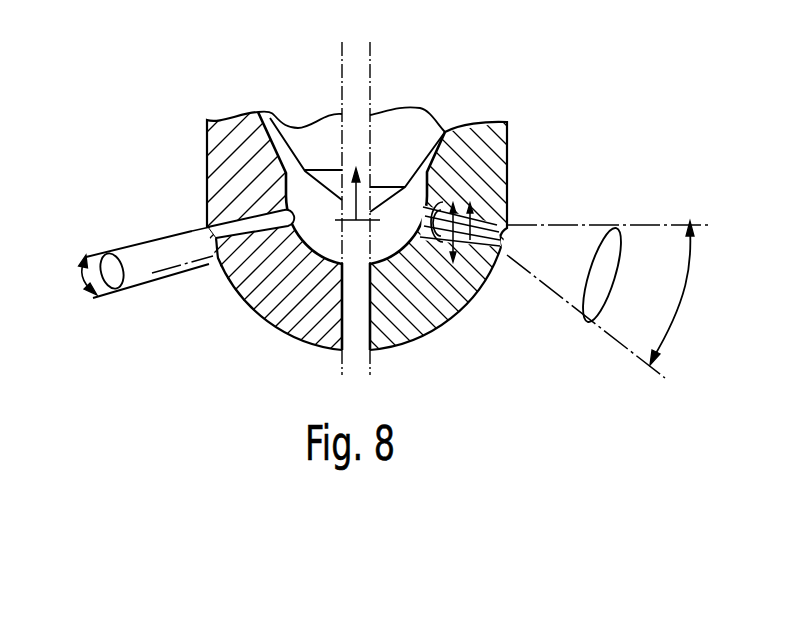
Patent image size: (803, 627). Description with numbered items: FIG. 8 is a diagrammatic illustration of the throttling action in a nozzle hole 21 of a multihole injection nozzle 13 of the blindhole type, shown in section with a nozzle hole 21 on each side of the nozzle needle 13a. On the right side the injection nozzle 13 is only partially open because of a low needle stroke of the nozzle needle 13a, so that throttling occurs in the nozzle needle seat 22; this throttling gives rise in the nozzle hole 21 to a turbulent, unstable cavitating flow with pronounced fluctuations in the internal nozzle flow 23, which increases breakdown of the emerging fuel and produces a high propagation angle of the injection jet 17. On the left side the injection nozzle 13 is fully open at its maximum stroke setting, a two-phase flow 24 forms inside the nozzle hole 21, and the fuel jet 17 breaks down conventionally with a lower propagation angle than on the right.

The injection nozzle 13 is at (185, 107).
The nozzle needle 13a is at (313, 128).
The injection jet 17 is at (137, 268).
The nozzle hole 21 is at (228, 242).
The nozzle needle seat 22 is at (456, 143).
The internal nozzle flow 23 is at (447, 197).
The two-phase flow 24 is at (240, 218).